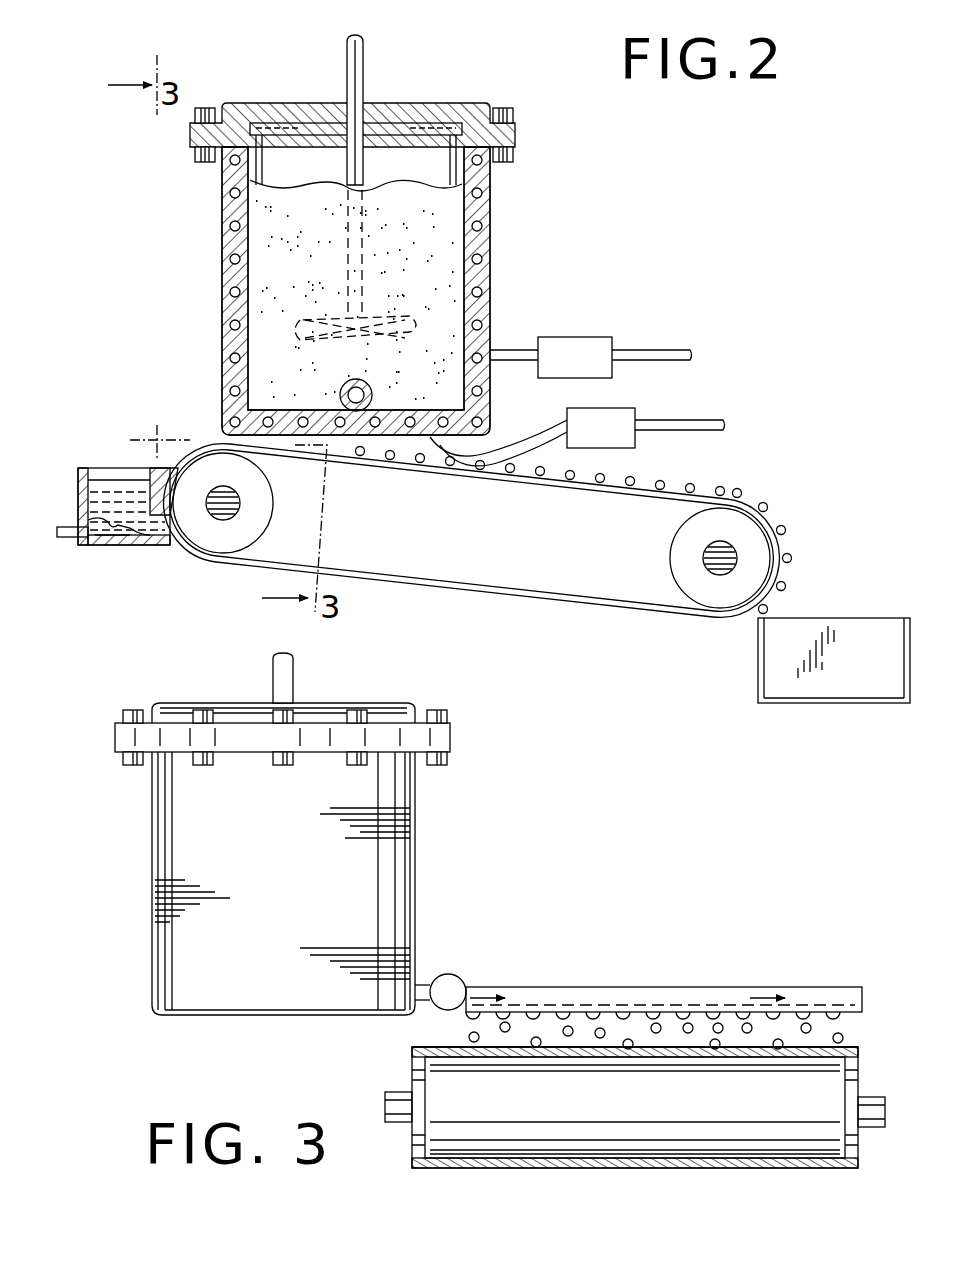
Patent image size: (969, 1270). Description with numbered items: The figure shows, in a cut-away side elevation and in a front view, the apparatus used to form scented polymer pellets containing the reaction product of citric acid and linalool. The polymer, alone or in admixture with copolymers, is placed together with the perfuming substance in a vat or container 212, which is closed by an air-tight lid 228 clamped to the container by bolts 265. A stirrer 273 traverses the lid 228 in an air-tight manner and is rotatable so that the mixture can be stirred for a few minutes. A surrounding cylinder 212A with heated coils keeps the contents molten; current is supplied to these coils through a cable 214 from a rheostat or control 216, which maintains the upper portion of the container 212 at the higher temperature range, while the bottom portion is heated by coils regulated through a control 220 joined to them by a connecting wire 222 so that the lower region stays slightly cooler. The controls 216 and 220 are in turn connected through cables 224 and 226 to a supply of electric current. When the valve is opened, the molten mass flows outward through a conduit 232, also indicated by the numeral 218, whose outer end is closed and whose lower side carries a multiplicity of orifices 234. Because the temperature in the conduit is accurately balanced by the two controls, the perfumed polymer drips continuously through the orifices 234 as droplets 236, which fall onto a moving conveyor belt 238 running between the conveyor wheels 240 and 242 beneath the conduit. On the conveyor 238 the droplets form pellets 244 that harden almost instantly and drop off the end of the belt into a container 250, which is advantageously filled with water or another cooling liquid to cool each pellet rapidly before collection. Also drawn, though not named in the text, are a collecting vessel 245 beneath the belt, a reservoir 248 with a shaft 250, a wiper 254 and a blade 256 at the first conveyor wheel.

In FIG. 2, the container 212 is at (220, 313).
In FIG. 3, the container 212 is at (148, 918).
In FIG. 2, the surrounding cylinder with heating coils 212A is at (476, 258).
In FIG. 2, the cable 214 is at (512, 352).
In FIG. 2, the control 216 is at (572, 340).
In FIG. 2, the conduit 218 is at (372, 396).
In FIG. 2, the control 220 is at (620, 437).
In FIG. 2, the connecting wire 222 is at (505, 447).
In FIG. 2, the cable 224 is at (650, 352).
In FIG. 2, the cable 226 is at (680, 422).
In FIG. 2, the lid 228 is at (412, 103).
In FIG. 3, the lid 228 is at (226, 708).
In FIG. 3, the conduit 232 is at (672, 990).
In FIG. 3, the orifices 234 is at (535, 1003).
In FIG. 3, the droplets 236 is at (572, 1028).
In FIG. 2, the conveyor belt 238 is at (432, 484).
In FIG. 3, the conveyor belt 238 is at (412, 1048).
In FIG. 2, the conveyor wheel 240 is at (262, 510).
In FIG. 2, the conveyor wheel 242 is at (685, 552).
In FIG. 3, the conveyor wheel 242 is at (672, 1105).
In FIG. 2, the pellets 244 is at (768, 512).
In FIG. 2, the collection container 245 is at (785, 700).
In FIG. 2, the reservoir 248 is at (80, 473).
In FIG. 2, the container 250 is at (82, 548).
In FIG. 2, the wiper 254 is at (138, 548).
In FIG. 2, the blade 256 is at (156, 470).
In FIG. 2, the bolts 265 is at (200, 157).
In FIG. 3, the bolts 265 is at (128, 712).
In FIG. 2, the stirrer 273 is at (346, 50).
In FIG. 3, the stirrer 273 is at (290, 684).